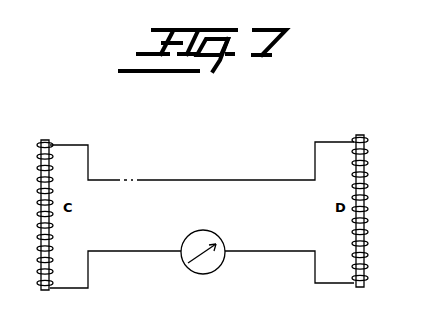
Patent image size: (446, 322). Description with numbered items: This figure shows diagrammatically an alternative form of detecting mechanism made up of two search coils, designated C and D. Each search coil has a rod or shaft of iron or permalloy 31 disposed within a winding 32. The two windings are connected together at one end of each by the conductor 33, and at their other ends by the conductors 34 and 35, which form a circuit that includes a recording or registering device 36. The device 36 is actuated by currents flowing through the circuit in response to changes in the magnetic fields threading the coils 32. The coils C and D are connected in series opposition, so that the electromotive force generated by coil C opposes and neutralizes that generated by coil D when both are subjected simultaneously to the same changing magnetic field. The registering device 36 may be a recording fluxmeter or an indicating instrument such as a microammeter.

The rod or shaft of iron or permalloy 31 is at (45, 140).
The winding 32 is at (38, 210).
The conductor 33 is at (185, 180).
The conductor 34 is at (143, 251).
The conductor 35 is at (255, 251).
The recording or registering device 36 is at (203, 231).